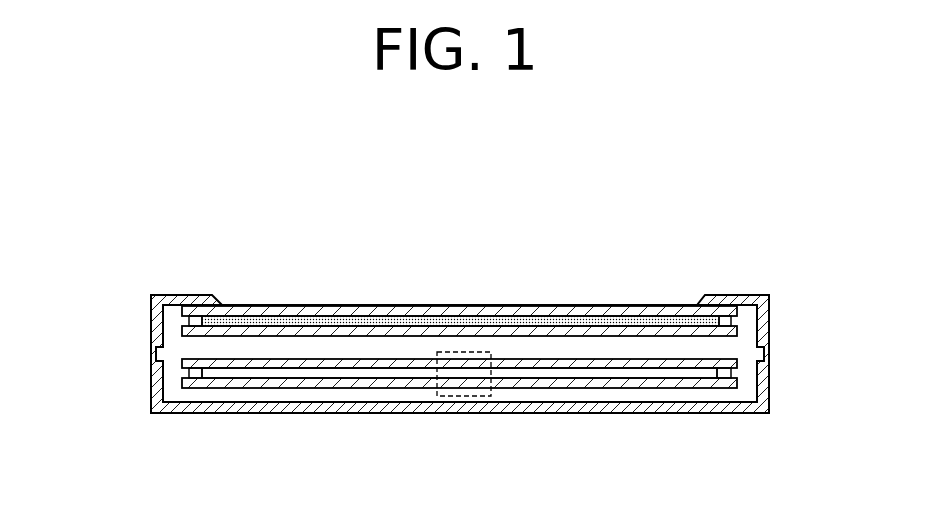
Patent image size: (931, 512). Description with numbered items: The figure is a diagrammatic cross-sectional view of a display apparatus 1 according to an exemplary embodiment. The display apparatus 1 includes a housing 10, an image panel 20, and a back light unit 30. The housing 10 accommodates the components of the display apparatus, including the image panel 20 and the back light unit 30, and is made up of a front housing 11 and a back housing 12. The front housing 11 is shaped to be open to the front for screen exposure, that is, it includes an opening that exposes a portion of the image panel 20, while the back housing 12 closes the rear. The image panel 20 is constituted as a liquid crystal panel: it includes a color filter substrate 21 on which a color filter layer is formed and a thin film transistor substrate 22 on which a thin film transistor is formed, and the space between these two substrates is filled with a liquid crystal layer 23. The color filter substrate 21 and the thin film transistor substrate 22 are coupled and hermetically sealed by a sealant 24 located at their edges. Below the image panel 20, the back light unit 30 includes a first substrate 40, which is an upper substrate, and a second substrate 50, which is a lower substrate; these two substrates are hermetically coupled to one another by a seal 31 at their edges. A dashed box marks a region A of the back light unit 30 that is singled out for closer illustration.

The display apparatus 1 is at (165, 178).
The housing 10 is at (134, 285).
The front housing 11 is at (177, 297).
The back housing 12 is at (173, 408).
The image panel 20 is at (453, 281).
The color filter substrate 21 is at (477, 312).
The thin film transistor substrate 22 is at (524, 321).
The liquid crystal layer 23 is at (573, 331).
The sealant 24 is at (189, 322).
The back light unit 30 is at (453, 418).
The seal 31 is at (189, 373).
The first substrate 40 is at (617, 363).
The second substrate 50 is at (678, 383).
The region A is at (463, 396).